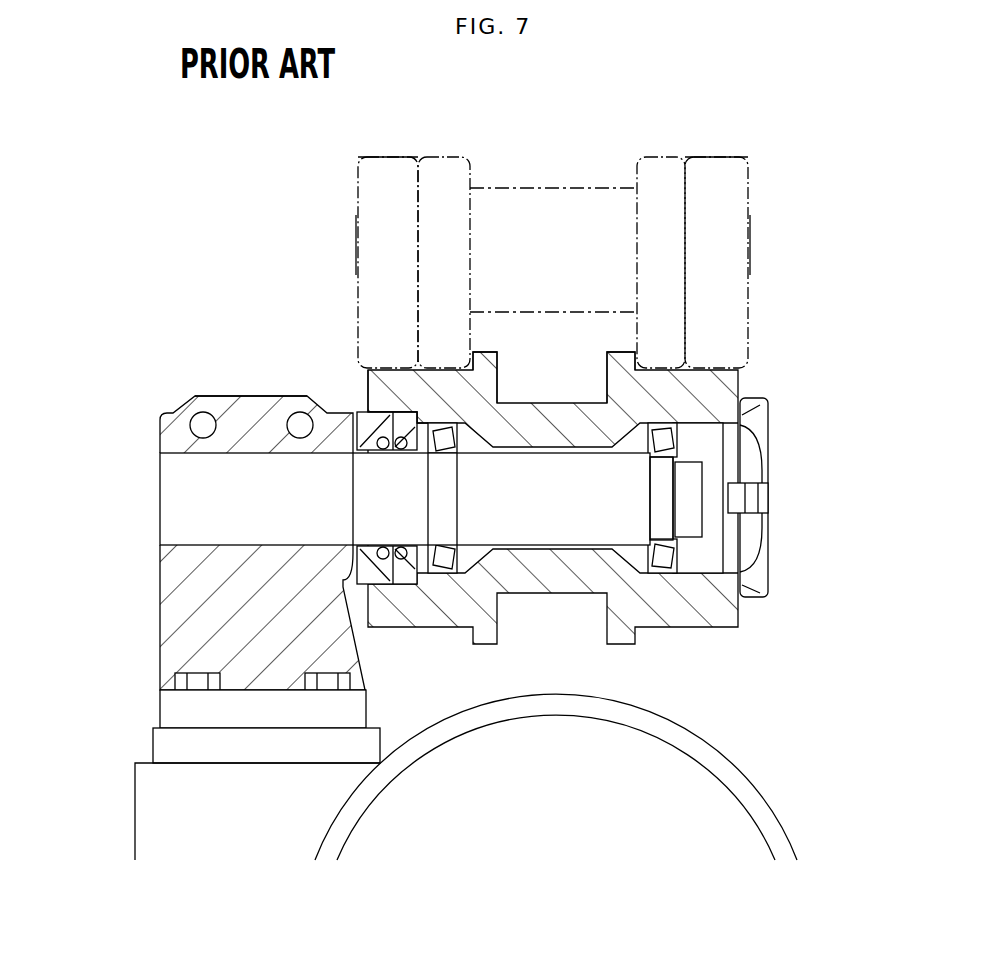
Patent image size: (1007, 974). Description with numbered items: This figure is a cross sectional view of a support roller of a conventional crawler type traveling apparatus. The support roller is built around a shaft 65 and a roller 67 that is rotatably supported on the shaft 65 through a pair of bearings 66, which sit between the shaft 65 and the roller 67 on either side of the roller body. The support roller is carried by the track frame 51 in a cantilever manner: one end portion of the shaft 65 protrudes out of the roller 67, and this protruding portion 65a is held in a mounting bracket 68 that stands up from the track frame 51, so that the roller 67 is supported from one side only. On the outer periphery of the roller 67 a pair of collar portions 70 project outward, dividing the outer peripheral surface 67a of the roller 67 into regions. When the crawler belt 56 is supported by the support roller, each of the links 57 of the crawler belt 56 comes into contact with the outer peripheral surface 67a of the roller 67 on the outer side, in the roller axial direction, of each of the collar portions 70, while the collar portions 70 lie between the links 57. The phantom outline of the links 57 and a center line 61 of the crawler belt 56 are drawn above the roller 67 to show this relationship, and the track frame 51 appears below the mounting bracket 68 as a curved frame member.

The track frame 51 is at (778, 809).
The crawler belt 56 is at (554, 224).
The links 57 is at (364, 246).
The roller axis line 61 is at (545, 197).
The shaft 65 is at (540, 460).
The protruding portion 65a is at (247, 462).
The bearings 66 is at (432, 430).
The roller 67 is at (712, 632).
The outer peripheral surface 67a is at (400, 367).
The mounting bracket 68 is at (158, 625).
The collar portions 70 is at (485, 348).